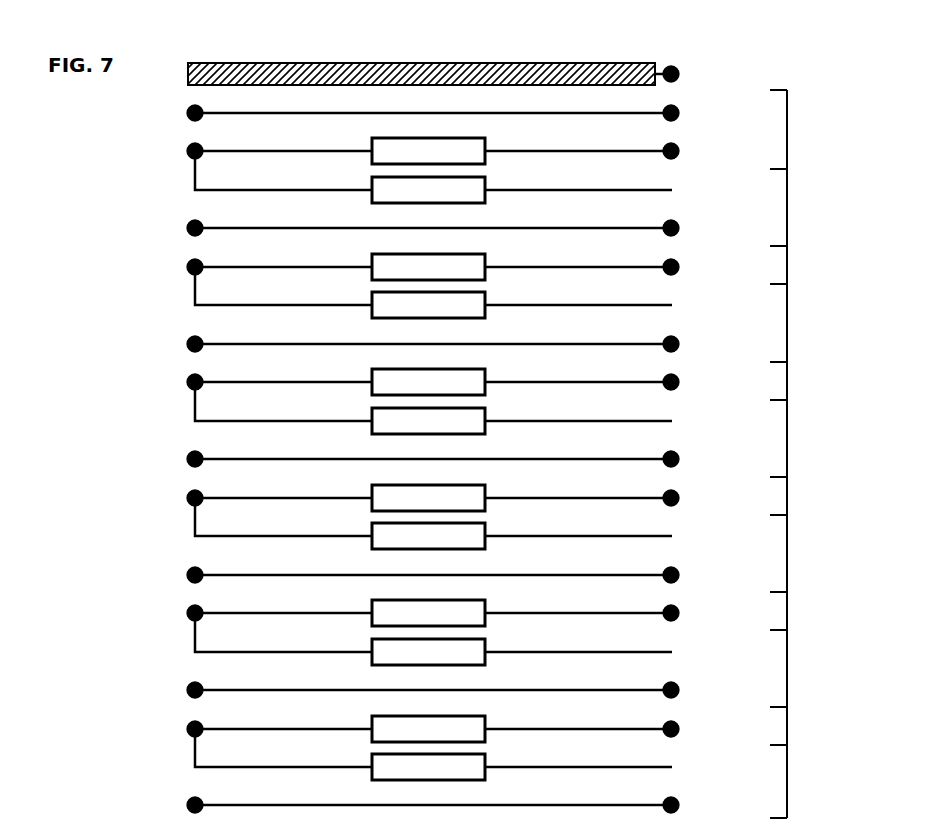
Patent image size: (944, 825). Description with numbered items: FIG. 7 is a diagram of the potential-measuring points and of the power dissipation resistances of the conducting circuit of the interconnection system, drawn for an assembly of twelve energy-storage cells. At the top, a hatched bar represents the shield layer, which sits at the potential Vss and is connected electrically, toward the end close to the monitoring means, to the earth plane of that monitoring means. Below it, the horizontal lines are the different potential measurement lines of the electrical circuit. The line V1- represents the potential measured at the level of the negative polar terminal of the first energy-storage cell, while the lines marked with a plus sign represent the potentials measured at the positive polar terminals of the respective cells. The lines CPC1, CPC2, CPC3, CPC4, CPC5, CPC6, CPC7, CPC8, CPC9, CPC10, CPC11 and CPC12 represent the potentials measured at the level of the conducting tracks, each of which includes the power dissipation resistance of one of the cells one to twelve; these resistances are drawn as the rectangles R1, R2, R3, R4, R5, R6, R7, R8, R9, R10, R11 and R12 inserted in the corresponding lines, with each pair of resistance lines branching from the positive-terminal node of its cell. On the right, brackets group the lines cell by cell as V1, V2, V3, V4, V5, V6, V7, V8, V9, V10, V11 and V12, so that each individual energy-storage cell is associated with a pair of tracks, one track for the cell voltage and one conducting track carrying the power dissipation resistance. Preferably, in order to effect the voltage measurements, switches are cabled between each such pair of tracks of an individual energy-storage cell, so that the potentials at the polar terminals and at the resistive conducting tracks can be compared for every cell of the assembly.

The shield layer potential Vss is at (459, 74).
The negative terminal potential line V1- is at (437, 113).
The power dissipation resistance R1 is at (428, 151).
The power dissipation resistance R2 is at (428, 190).
The power dissipation resistance R3 is at (428, 267).
The power dissipation resistance R4 is at (428, 305).
The power dissipation resistance R5 is at (428, 382).
The power dissipation resistance R6 is at (428, 421).
The power dissipation resistance R7 is at (428, 498).
The power dissipation resistance R8 is at (428, 536).
The power dissipation resistance R9 is at (428, 613).
The power dissipation resistance R10 is at (428, 652).
The power dissipation resistance R11 is at (428, 729).
The power dissipation resistance R12 is at (428, 767).
The conducting track potential line CPC1 is at (617, 151).
The conducting track potential line CPC2 is at (617, 190).
The conducting track potential line CPC3 is at (617, 267).
The conducting track potential line CPC4 is at (617, 305).
The conducting track potential line CPC5 is at (617, 382).
The conducting track potential line CPC6 is at (617, 421).
The conducting track potential line CPC7 is at (617, 498).
The conducting track potential line CPC8 is at (617, 536).
The conducting track potential line CPC9 is at (617, 613).
The conducting track potential line CPC10 is at (623, 652).
The conducting track potential line CPC11 is at (623, 729).
The conducting track potential line CPC12 is at (623, 767).
The energy-storage cell track group V1 is at (799, 129).
The energy-storage cell track group V2 is at (799, 221).
The energy-storage cell track group V3 is at (799, 268).
The energy-storage cell track group V4 is at (799, 336).
The energy-storage cell track group V5 is at (799, 384).
The energy-storage cell track group V6 is at (799, 451).
The energy-storage cell track group V7 is at (799, 499).
The energy-storage cell track group V8 is at (799, 566).
The energy-storage cell track group V9 is at (799, 614).
The energy-storage cell track group V10 is at (805, 681).
The energy-storage cell track group V11 is at (805, 729).
The energy-storage cell track group V12 is at (805, 793).